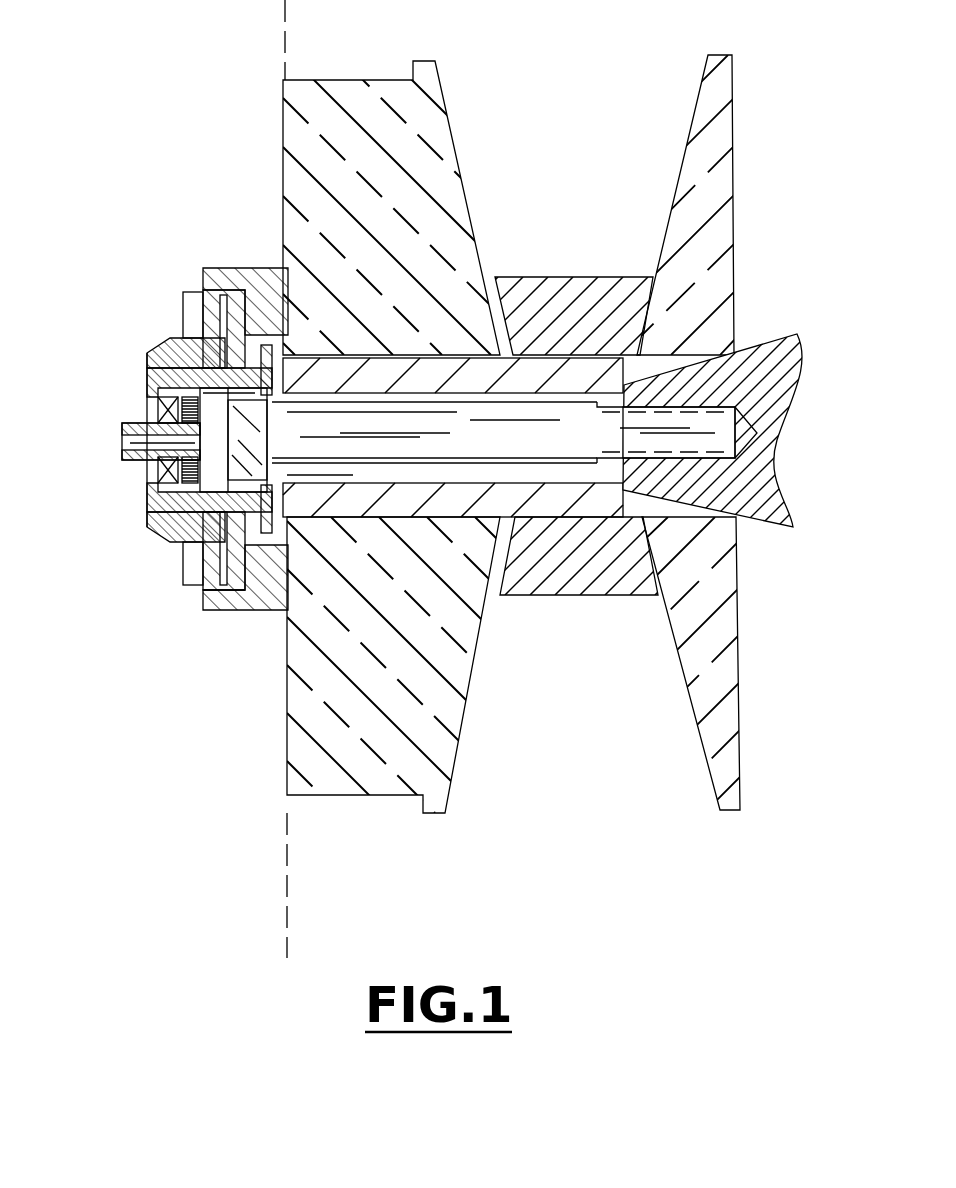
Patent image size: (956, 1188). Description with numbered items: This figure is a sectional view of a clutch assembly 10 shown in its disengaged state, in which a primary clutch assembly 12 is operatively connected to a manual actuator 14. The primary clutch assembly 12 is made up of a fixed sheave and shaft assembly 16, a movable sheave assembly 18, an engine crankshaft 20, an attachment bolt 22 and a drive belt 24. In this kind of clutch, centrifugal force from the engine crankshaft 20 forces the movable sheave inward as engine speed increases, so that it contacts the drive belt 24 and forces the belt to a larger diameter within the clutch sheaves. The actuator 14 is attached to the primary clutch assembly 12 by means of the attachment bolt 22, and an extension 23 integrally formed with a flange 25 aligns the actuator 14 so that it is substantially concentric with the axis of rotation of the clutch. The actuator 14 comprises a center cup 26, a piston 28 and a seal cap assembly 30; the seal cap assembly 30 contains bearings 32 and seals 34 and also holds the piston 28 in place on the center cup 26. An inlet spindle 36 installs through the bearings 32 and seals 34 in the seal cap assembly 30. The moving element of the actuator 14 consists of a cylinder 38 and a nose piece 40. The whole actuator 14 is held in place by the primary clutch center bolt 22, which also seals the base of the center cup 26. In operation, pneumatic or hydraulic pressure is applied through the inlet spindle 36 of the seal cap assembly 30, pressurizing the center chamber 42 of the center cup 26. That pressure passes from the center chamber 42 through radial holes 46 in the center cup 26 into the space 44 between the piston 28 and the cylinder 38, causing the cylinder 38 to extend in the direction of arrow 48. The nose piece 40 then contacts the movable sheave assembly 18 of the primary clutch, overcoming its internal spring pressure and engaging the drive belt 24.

The clutch assembly 10 is at (553, 88).
The primary clutch assembly 12 is at (308, 58).
The actuator 14 is at (180, 263).
The fixed sheave and shaft assembly 16 is at (725, 85).
The movable sheave assembly 18 is at (383, 775).
The engine crankshaft 20 is at (760, 350).
The attachment bolt 22 is at (710, 445).
The extension 23 is at (283, 404).
The drive belt 24 is at (572, 290).
The flange 25 is at (285, 595).
The center cup 26 is at (170, 500).
The piston 28 is at (190, 555).
The seal cap assembly 30 is at (163, 350).
The bearings 32 is at (158, 468).
The seals 34 is at (152, 380).
The inlet spindle 36 is at (152, 416).
The cylinder 38 is at (212, 590).
The nose piece 40 is at (243, 607).
The center chamber 42 is at (208, 446).
The space 44 is at (235, 580).
The radial holes 46 is at (205, 318).
The arrow 48 is at (268, 175).